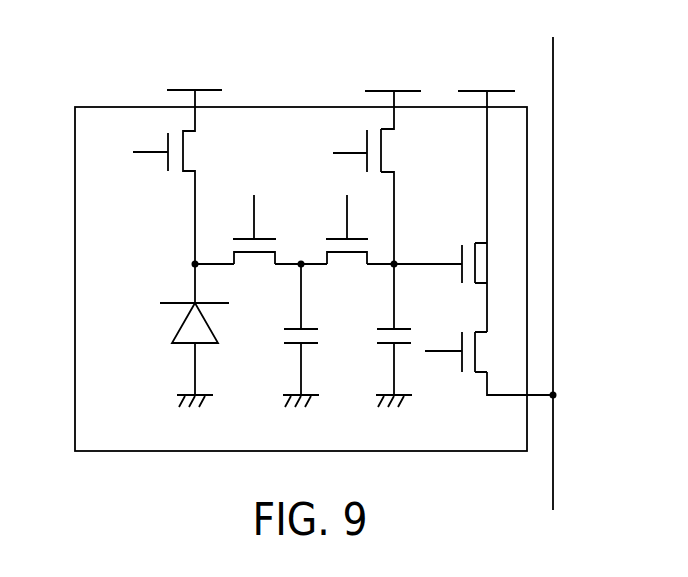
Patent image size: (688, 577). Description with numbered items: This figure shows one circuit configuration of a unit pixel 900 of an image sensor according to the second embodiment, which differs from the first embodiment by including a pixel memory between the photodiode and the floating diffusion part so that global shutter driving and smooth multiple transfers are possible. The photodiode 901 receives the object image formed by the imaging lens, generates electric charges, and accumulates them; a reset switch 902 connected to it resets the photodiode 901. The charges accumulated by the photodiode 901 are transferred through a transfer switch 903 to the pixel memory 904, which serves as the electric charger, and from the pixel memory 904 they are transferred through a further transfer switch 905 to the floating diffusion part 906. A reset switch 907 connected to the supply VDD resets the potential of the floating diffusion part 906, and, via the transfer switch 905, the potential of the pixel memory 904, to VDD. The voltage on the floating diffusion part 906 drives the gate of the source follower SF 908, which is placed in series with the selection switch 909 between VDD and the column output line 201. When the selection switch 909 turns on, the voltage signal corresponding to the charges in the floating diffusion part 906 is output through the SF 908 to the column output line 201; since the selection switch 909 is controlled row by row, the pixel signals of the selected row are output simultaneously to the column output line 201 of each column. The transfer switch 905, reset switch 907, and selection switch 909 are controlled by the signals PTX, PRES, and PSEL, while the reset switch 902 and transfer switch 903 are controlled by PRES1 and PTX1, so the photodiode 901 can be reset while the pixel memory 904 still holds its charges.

The unit pixel 900 is at (88, 107).
The column output line 201 is at (585, 260).
The photodiode 901 is at (173, 350).
The reset switch 902 is at (172, 177).
The transfer switch 903 is at (243, 229).
The pixel memory 904 is at (287, 335).
The transfer switch 905 is at (335, 229).
The floating diffusion part 906 is at (380, 335).
The reset switch 907 is at (372, 177).
The SF 908 is at (465, 275).
The selection switch 909 is at (489, 368).
The element VDD is at (488, 151).